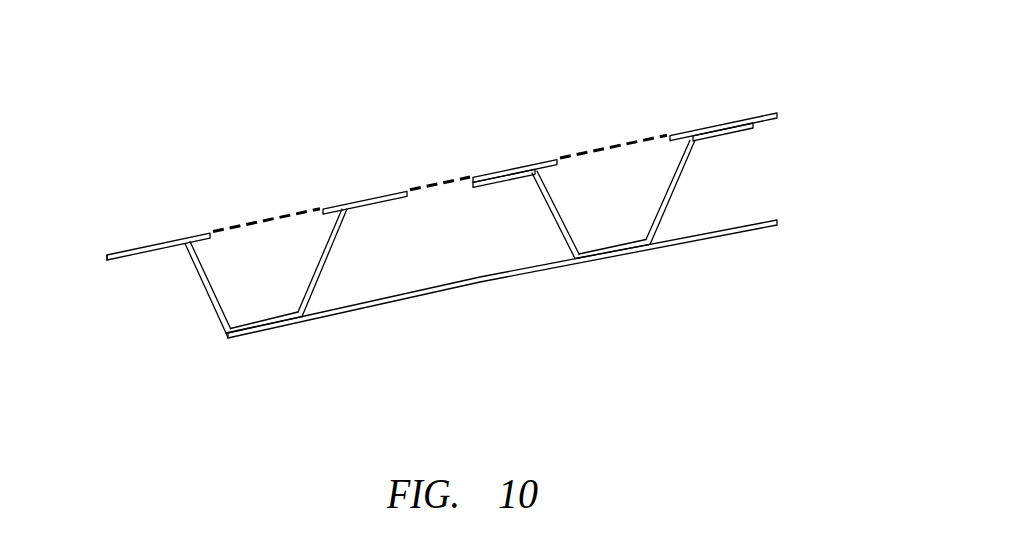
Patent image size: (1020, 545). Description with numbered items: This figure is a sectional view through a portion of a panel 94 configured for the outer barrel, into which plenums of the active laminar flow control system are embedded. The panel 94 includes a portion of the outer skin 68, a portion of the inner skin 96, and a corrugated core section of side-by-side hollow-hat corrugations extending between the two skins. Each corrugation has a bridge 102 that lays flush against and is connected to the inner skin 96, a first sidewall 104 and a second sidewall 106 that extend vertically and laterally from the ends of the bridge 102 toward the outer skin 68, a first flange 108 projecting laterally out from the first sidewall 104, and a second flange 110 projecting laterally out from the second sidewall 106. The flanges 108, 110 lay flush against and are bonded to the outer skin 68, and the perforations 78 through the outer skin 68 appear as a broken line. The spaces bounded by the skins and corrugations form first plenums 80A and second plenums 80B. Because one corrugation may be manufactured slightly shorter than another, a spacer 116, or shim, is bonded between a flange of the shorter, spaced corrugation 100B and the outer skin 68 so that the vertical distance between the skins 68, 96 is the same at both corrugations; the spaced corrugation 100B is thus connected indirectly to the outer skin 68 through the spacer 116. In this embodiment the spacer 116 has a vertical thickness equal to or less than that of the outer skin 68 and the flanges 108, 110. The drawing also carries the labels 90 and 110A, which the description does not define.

The panel 94 is at (806, 64).
The upper skin 90 is at (431, 100).
The perforations 78 is at (278, 219).
The first flange 108 is at (157, 249).
The outer skin 68 is at (118, 253).
The second flange 110 is at (380, 192).
The spacer 116 is at (725, 122).
The first sidewall 104 is at (203, 291).
The second sidewall 106 is at (322, 273).
The first hat stiffener 110A is at (186, 334).
The spaced corrugation 100B is at (686, 216).
The bridge 102 is at (272, 328).
The inner skin 96 is at (242, 342).
The first plenum 80A is at (295, 281).
The second plenum 80B is at (430, 250).